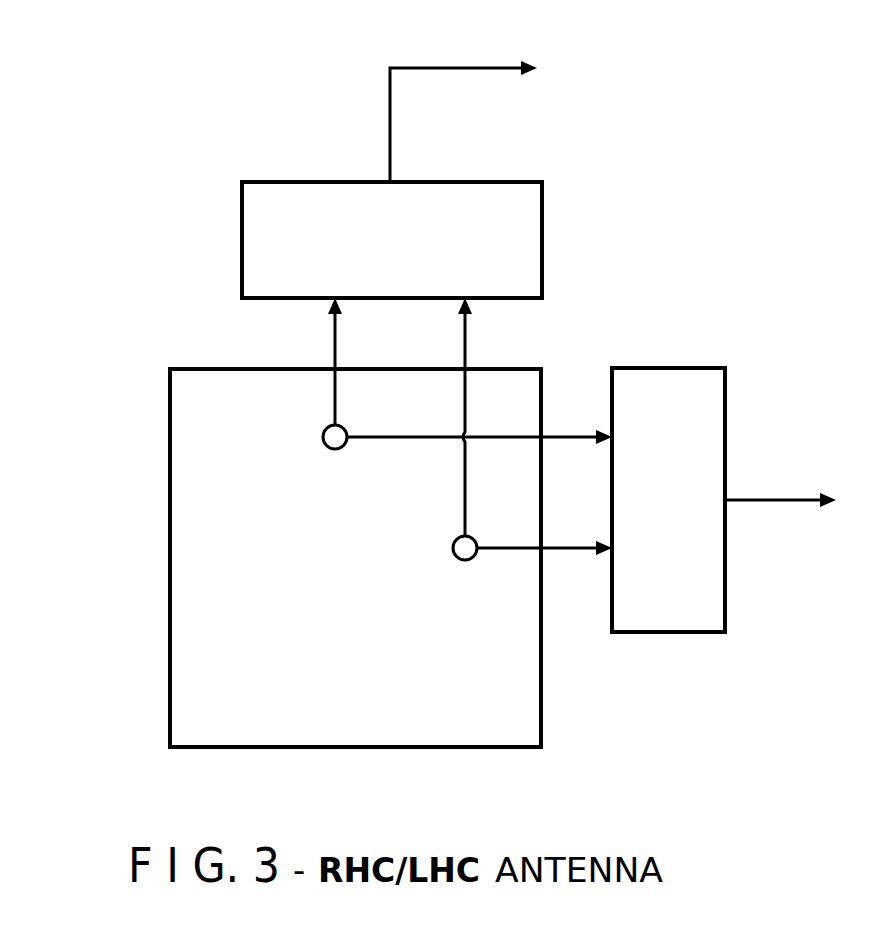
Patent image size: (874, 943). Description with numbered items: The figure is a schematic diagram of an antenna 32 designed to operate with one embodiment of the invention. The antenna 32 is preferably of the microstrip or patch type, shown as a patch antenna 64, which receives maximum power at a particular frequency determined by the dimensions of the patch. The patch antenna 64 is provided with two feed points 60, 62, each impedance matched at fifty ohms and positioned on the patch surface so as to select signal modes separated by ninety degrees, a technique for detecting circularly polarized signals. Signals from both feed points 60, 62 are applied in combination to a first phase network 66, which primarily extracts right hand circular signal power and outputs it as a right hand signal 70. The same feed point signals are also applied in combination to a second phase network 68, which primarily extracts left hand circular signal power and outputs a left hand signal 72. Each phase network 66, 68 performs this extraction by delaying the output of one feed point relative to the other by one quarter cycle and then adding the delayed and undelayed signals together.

The antenna 32 is at (754, 36).
The feed point 60 is at (335, 450).
The feed point 62 is at (465, 561).
The patch antenna 64 is at (168, 566).
The first phase network 66 is at (726, 410).
The second phase network 68 is at (543, 221).
The right hand signal 70 is at (770, 504).
The left hand signal 72 is at (388, 103).